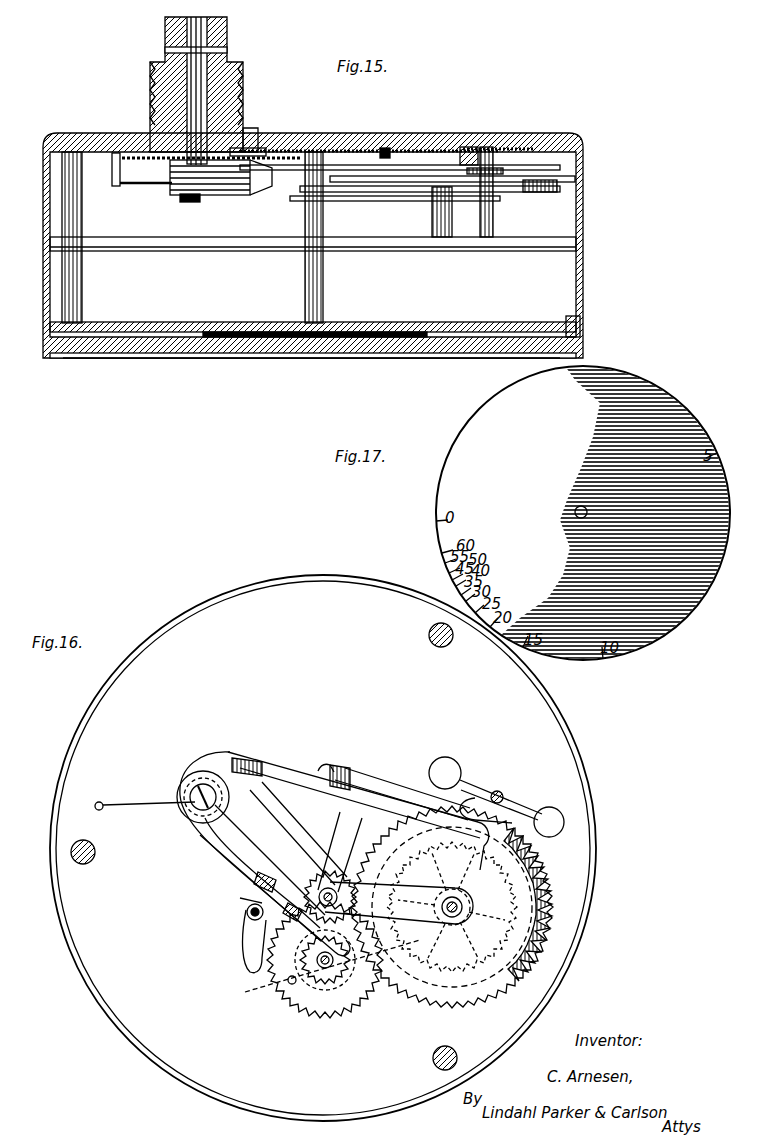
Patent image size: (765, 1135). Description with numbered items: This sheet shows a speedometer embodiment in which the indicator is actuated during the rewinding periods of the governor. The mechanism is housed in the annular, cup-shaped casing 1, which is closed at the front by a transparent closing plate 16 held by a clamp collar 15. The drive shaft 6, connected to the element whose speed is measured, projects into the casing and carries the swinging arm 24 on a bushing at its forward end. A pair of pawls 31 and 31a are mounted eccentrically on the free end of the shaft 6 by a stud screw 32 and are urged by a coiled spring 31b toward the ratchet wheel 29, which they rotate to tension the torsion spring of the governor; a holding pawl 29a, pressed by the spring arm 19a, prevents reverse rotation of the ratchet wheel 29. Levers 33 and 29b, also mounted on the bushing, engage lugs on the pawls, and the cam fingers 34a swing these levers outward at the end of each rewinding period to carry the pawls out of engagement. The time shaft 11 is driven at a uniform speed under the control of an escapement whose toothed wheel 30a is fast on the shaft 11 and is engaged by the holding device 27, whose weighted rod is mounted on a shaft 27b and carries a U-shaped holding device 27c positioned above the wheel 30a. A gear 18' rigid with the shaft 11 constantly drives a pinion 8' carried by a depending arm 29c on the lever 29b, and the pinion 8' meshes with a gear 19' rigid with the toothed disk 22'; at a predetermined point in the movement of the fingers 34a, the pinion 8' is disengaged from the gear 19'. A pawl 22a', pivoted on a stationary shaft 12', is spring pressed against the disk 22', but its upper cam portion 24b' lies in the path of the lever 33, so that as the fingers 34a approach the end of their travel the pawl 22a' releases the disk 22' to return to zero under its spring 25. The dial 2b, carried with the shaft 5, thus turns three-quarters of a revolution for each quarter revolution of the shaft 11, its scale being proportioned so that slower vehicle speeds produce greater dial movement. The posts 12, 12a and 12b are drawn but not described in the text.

In FIG. 15, the casing 1 is at (583, 225).
In FIG. 16, the casing 1 is at (567, 727).
In FIG. 15, the dial 2b is at (336, 338).
In FIG. 17, the dial 2b is at (646, 380).
In FIG. 15, the shaft 5 is at (322, 280).
In FIG. 17, the shaft 5 is at (575, 512).
In FIG. 15, the shaft 6 is at (238, 80).
In FIG. 15, the pinion 8' is at (425, 205).
In FIG. 16, the pinion 8' is at (333, 867).
In FIG. 15, the shaft 11 is at (442, 220).
In FIG. 16, the shaft 11 is at (463, 913).
In FIG. 16, the post 12 is at (446, 652).
In FIG. 16, the post 12a is at (84, 865).
In FIG. 16, the post 12b is at (456, 1050).
In FIG. 15, the stationary shaft 12' is at (254, 130).
In FIG. 16, the stationary shaft 12' is at (217, 917).
In FIG. 15, the clamp collar 15 is at (585, 326).
In FIG. 15, the front closing plate 16 is at (428, 342).
In FIG. 15, the gear 18' is at (385, 209).
In FIG. 16, the gear 18' is at (452, 926).
In FIG. 15, the arm of coiled spring 19a is at (250, 128).
In FIG. 16, the gear 19' is at (302, 989).
In FIG. 16, the toothed disk 22' is at (325, 979).
In FIG. 16, the pawl 22a' is at (226, 941).
In FIG. 15, the arm 24 is at (160, 186).
In FIG. 16, the cam portion 24b' is at (234, 899).
In FIG. 16, the spring 25 is at (321, 972).
In FIG. 15, the holding device 27 is at (558, 186).
In FIG. 16, the holding device 27 is at (470, 786).
In FIG. 15, the shaft 27b is at (496, 251).
In FIG. 16, the shaft 27b is at (501, 792).
In FIG. 16, the U-shaped holding device 27c is at (515, 803).
In FIG. 15, the ratchet wheel 29 is at (560, 167).
In FIG. 16, the ratchet wheel 29 is at (545, 882).
In FIG. 15, the holding pawl 29a is at (152, 156).
In FIG. 16, the holding pawl 29a is at (290, 842).
In FIG. 15, the lever 29b is at (285, 165).
In FIG. 16, the lever 29b is at (338, 800).
In FIG. 16, the depending arm 29c is at (365, 818).
In FIG. 15, the toothed wheel 30a is at (530, 149).
In FIG. 16, the toothed wheel 30a is at (535, 858).
In FIG. 15, the pawl 31 is at (378, 148).
In FIG. 16, the pawl 31 is at (340, 770).
In FIG. 16, the pawl 31a is at (240, 870).
In FIG. 15, the coiled spring 31b is at (235, 196).
In FIG. 16, the coiled spring 31b is at (294, 770).
In FIG. 15, the stud screw 32 is at (188, 202).
In FIG. 16, the stud screw 32 is at (190, 796).
In FIG. 16, the lever 33 is at (245, 855).
In FIG. 16, the cam fingers 34a is at (452, 907).